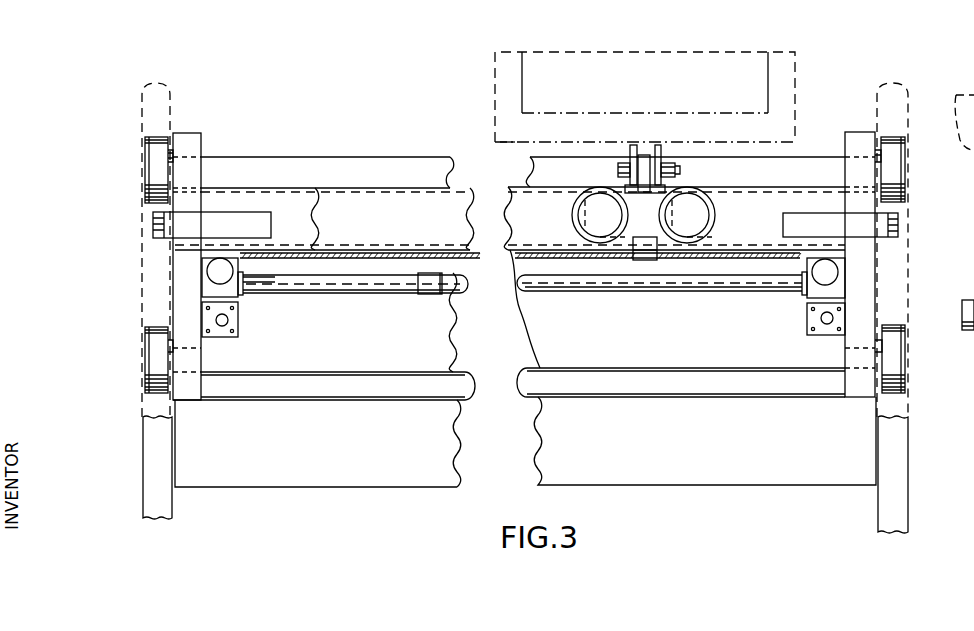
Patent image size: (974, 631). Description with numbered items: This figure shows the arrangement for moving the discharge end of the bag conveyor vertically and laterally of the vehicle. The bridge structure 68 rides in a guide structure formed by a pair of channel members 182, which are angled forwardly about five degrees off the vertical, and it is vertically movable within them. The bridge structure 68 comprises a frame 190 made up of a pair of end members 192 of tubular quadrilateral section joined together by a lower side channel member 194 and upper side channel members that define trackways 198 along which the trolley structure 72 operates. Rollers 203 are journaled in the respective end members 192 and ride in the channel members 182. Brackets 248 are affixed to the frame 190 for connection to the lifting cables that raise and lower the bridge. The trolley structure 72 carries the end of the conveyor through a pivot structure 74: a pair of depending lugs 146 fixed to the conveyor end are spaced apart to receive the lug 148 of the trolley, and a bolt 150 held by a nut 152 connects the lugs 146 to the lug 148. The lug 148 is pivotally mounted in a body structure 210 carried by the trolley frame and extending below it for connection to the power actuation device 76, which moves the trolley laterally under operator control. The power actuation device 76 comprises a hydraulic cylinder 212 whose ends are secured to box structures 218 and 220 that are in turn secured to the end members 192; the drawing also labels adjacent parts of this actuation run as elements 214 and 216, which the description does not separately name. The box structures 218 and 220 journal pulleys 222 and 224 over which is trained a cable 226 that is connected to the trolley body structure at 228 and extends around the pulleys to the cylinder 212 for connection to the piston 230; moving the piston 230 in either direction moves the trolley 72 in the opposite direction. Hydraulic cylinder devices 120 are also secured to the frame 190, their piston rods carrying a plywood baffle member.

The bridge structure 68 is at (820, 143).
The trolley structure 72 is at (665, 260).
The pivot structure 74 is at (680, 138).
The power actuation device 76 is at (192, 268).
The hydraulic cylinder device 120 is at (230, 319).
The depending lugs 146 is at (627, 152).
The lug 148 is at (598, 206).
The bolt 150 is at (615, 172).
The nut 152 is at (667, 178).
The channel member 182 is at (148, 465).
The frame 190 is at (865, 283).
The end member 192 is at (178, 308).
The lower side channel member 194 is at (342, 157).
The trackway 198 is at (961, 212).
The roller 203 is at (158, 372).
The body structure 210 is at (635, 260).
The hydraulic cylinder 212 is at (380, 297).
The rod end 214 is at (282, 291).
The rod 216 is at (768, 292).
The box structure 218 is at (202, 283).
The box structure 220 is at (843, 290).
The pulley 222 is at (205, 262).
The pulley 224 is at (843, 237).
The cable 226 is at (378, 250).
The cable connection 228 is at (645, 262).
The piston 230 is at (435, 298).
The bracket 248 is at (153, 218).